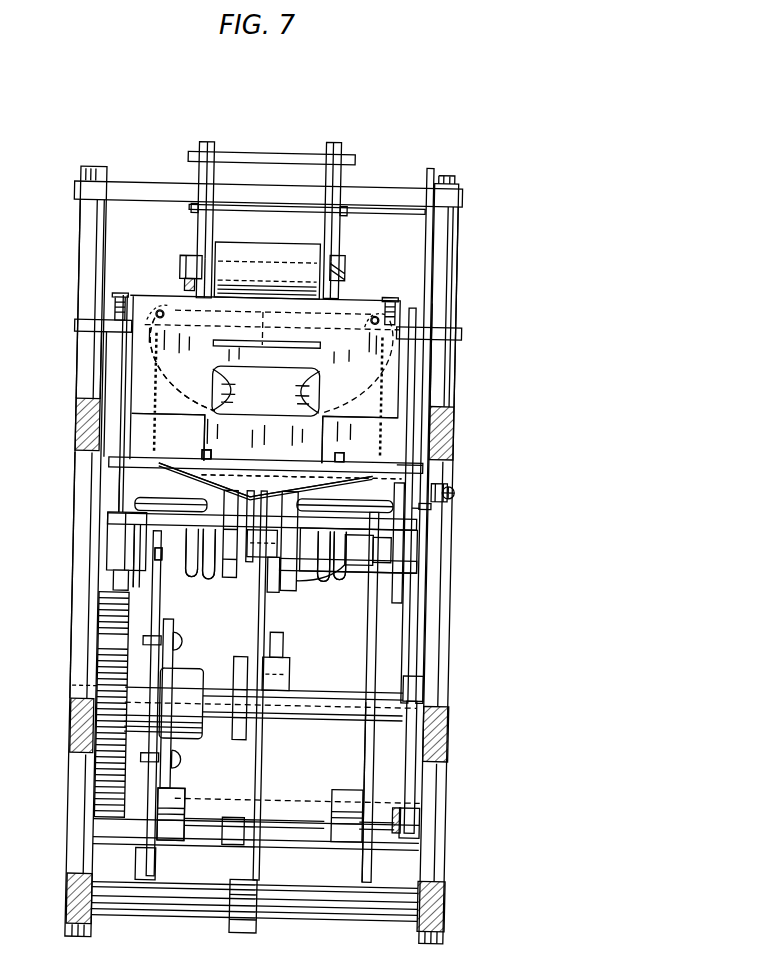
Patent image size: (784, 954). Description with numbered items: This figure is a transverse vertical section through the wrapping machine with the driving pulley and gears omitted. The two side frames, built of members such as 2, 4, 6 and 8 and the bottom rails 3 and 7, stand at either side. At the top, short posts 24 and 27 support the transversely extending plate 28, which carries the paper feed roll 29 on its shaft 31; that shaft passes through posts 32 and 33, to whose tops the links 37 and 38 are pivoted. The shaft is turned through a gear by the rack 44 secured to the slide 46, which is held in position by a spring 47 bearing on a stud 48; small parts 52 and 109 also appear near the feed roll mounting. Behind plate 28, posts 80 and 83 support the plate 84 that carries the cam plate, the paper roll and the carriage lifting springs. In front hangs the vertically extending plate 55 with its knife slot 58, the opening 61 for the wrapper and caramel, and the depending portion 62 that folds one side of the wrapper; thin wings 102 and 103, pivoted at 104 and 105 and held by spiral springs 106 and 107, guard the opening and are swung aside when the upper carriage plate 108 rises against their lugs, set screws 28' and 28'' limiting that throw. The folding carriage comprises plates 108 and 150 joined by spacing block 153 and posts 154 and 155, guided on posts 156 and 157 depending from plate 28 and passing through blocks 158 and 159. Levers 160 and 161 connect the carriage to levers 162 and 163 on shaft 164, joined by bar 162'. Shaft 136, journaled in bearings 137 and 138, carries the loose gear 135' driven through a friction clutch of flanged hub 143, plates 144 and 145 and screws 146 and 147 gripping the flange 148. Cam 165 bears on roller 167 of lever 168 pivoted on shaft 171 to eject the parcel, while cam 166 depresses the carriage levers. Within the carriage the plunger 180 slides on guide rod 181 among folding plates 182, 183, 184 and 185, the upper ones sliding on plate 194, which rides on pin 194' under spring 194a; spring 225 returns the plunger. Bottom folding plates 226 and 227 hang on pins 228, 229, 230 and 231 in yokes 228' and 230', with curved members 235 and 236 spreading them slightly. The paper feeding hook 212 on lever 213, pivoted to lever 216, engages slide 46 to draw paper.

The side frame member 2 is at (451, 434).
The bottom rail 3 is at (452, 911).
The side frame member 4 is at (451, 570).
The side frame member 6 is at (73, 429).
The bottom rail 7 is at (74, 908).
The side frame member 8 is at (73, 549).
The short post 24 is at (451, 377).
The short post 27 is at (73, 373).
The transversely extending plate 28 is at (81, 332).
The set screw 28' is at (116, 292).
The set screw 28'' is at (402, 293).
The paper feed roll 29 is at (256, 243).
The shaft 31 is at (334, 264).
The post 32 is at (199, 223).
The post 33 is at (325, 231).
The link 37 is at (191, 172).
The link 38 is at (333, 180).
The rack 44 is at (422, 168).
The slide 46 is at (432, 398).
The spring 47 is at (430, 502).
The stud 48 is at (453, 486).
The spring 52 is at (174, 270).
The vertically extending plate 55 is at (365, 416).
The knife slot 58 is at (318, 346).
The opening 61 is at (305, 392).
The depending portion 62 is at (204, 450).
The post 80 is at (451, 268).
The post 83 is at (73, 271).
The plate 84 is at (455, 194).
The wing 102 is at (236, 384).
The wing 103 is at (238, 396).
The pivot 104 is at (155, 312).
The pivot 105 is at (371, 314).
The spiral spring 106 is at (168, 437).
The spiral spring 107 is at (359, 440).
The upper carriage plate 108 is at (337, 460).
The bracket 109 is at (177, 262).
The gear 135' is at (78, 703).
The shaft 136 is at (343, 690).
The bearing 137 is at (443, 682).
The bearing 138 is at (74, 689).
The flanged hub 143 is at (175, 626).
The clutch plate 144 is at (155, 628).
The clutch plate 145 is at (160, 790).
The screw 146 is at (184, 644).
The screw 147 is at (186, 761).
The flange 148 is at (172, 680).
The lower carriage plate 150 is at (107, 521).
The spacing block 153 is at (265, 474).
The post 154 is at (118, 484).
The post 155 is at (419, 506).
The guide post 156 is at (107, 465).
The guide post 157 is at (421, 466).
The block 158 is at (108, 560).
The block 159 is at (385, 547).
The lever 160 is at (158, 608).
The lever 161 is at (378, 633).
The lever 162 is at (126, 863).
The bar 162' is at (268, 897).
The lever 163 is at (367, 792).
The shaft 164 is at (318, 798).
The cam 165 is at (282, 642).
The cam 166 is at (242, 657).
The roller 167 is at (290, 664).
The lever 168 is at (260, 618).
The shaft 171 is at (204, 912).
The plunger 180 is at (249, 495).
The guide rod 181 is at (300, 489).
The lower folding plate 182 is at (148, 518).
The upper folding plate 183 is at (143, 500).
The upper folding plate 184 is at (370, 505).
The lower folding plate 185 is at (378, 548).
The plate 194 is at (374, 442).
The spring 194a is at (155, 435).
The pin 194' is at (194, 450).
The paper feeding hook 212 is at (410, 673).
The lever 213 is at (410, 770).
The lever 216 is at (408, 840).
The spring 225 is at (276, 560).
The bottom folding plate 226 is at (230, 578).
The bottom folding plate 227 is at (298, 590).
The pin 228 is at (171, 550).
The yoke 228' is at (204, 563).
The pin 229 is at (186, 568).
The pin 230 is at (355, 550).
The yoke 230' is at (310, 559).
The pin 231 is at (343, 578).
The curved member 235 is at (190, 578).
The curved member 236 is at (328, 578).